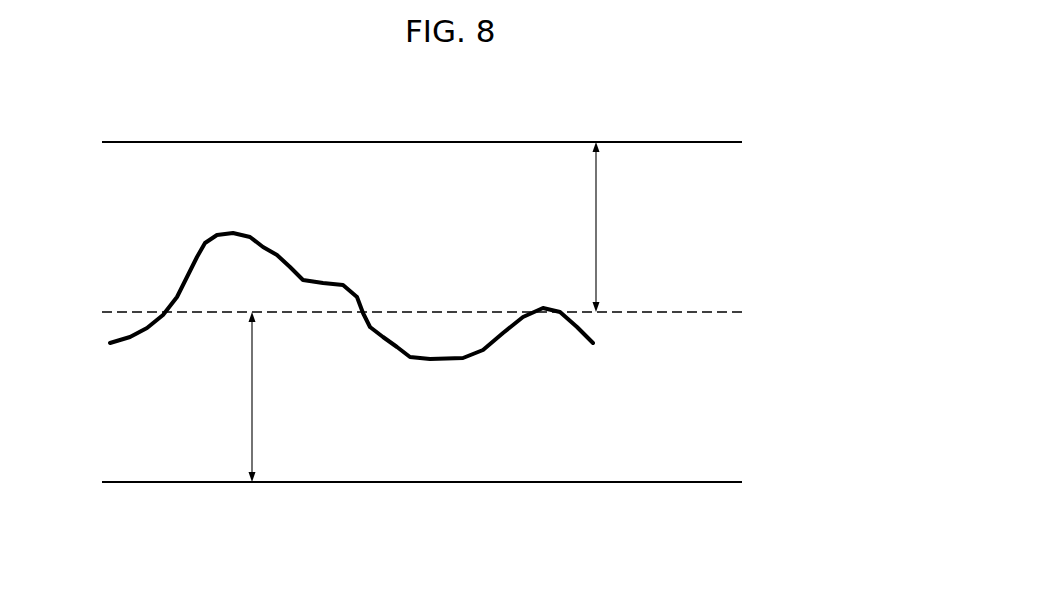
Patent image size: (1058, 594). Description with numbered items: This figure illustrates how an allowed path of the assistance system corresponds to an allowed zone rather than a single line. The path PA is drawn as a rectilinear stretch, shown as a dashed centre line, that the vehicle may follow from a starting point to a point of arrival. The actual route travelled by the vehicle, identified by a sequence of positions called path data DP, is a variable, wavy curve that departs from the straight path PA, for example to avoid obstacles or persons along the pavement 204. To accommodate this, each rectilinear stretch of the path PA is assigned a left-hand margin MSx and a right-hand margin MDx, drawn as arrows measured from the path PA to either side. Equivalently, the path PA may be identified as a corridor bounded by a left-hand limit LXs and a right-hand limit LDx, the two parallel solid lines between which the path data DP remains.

The left-hand limit LXs is at (480, 142).
The right-hand limit LDx is at (415, 482).
The path PA is at (688, 312).
The path data DP is at (282, 257).
The left-hand margin MSx is at (621, 227).
The right-hand margin MDx is at (277, 397).
The pavement 204 is at (688, 403).